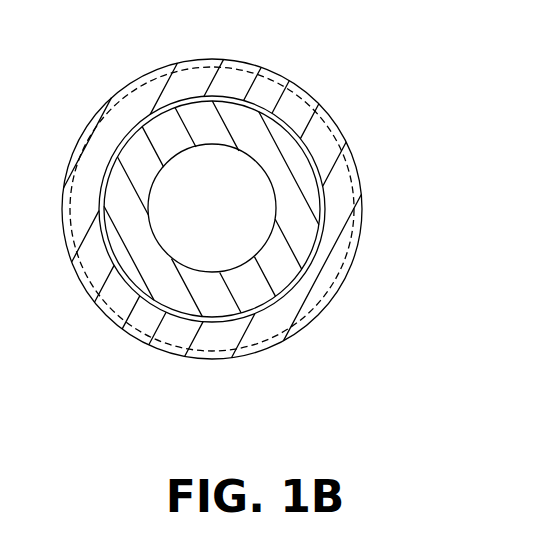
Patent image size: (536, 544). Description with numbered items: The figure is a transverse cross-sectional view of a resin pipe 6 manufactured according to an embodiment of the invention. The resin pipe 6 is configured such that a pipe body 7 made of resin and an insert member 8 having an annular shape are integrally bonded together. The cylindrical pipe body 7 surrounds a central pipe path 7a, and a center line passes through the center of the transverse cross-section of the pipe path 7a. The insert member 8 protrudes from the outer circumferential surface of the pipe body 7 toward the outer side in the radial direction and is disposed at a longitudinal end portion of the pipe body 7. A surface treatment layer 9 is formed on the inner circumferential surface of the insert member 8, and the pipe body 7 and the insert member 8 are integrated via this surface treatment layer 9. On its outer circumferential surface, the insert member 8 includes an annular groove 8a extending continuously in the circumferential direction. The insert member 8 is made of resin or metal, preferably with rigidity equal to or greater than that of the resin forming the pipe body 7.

The resin pipe 6 is at (362, 107).
The pipe body 7 is at (287, 272).
The pipe path 7a is at (152, 185).
The insert member 8 is at (115, 127).
The annular groove 8a is at (289, 81).
The surface treatment layer 9 is at (178, 296).